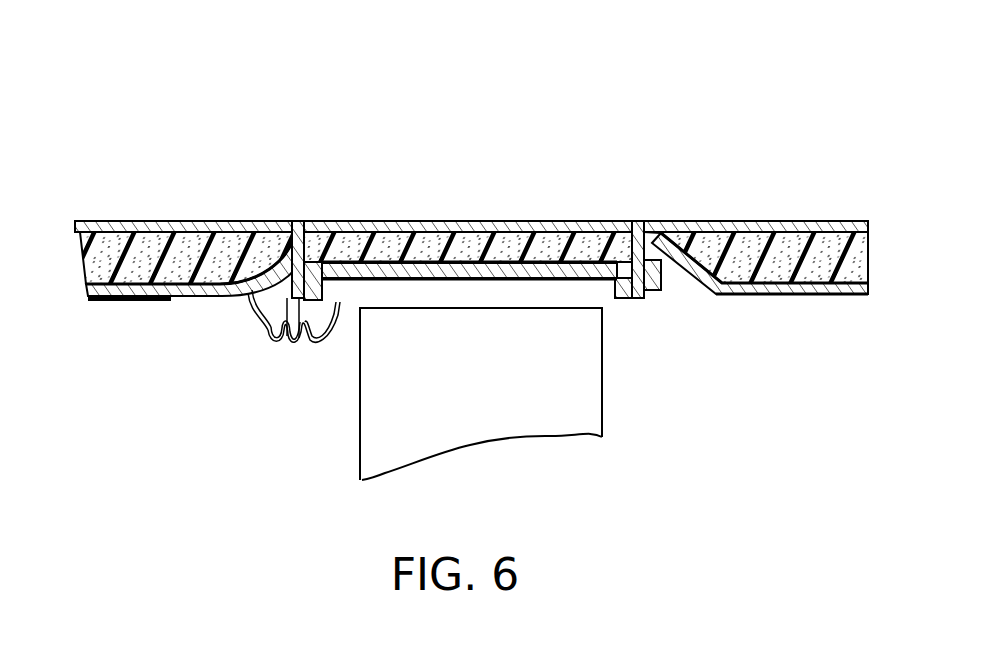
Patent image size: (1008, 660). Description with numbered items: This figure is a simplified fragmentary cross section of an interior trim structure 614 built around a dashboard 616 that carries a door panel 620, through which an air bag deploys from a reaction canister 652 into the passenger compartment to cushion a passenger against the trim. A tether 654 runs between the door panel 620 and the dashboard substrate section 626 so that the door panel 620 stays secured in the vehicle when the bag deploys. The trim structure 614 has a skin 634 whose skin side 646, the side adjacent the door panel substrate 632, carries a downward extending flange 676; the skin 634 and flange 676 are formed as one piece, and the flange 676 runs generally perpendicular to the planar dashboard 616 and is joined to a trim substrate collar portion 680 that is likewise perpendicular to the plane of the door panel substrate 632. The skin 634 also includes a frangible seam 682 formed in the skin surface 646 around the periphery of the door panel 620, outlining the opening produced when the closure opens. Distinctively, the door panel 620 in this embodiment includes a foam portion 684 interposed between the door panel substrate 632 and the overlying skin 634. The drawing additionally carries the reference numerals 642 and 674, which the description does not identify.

The interior trim structure 614 is at (471, 241).
The dashboard 616 is at (756, 258).
The door panel 620 is at (378, 223).
The dashboard substrate section 626 is at (170, 300).
The door panel substrate 632 is at (561, 266).
The skin 634 is at (127, 222).
The inclined skin portion 642 is at (691, 290).
The skin side 646 is at (198, 231).
The reaction canister 652 is at (482, 396).
The tether 654 is at (255, 314).
The clip leg 674 is at (315, 340).
The flange 676 is at (297, 340).
The trim substrate collar portion 680 is at (283, 338).
The frangible seam 682 is at (305, 227).
The foam portion 684 is at (478, 229).